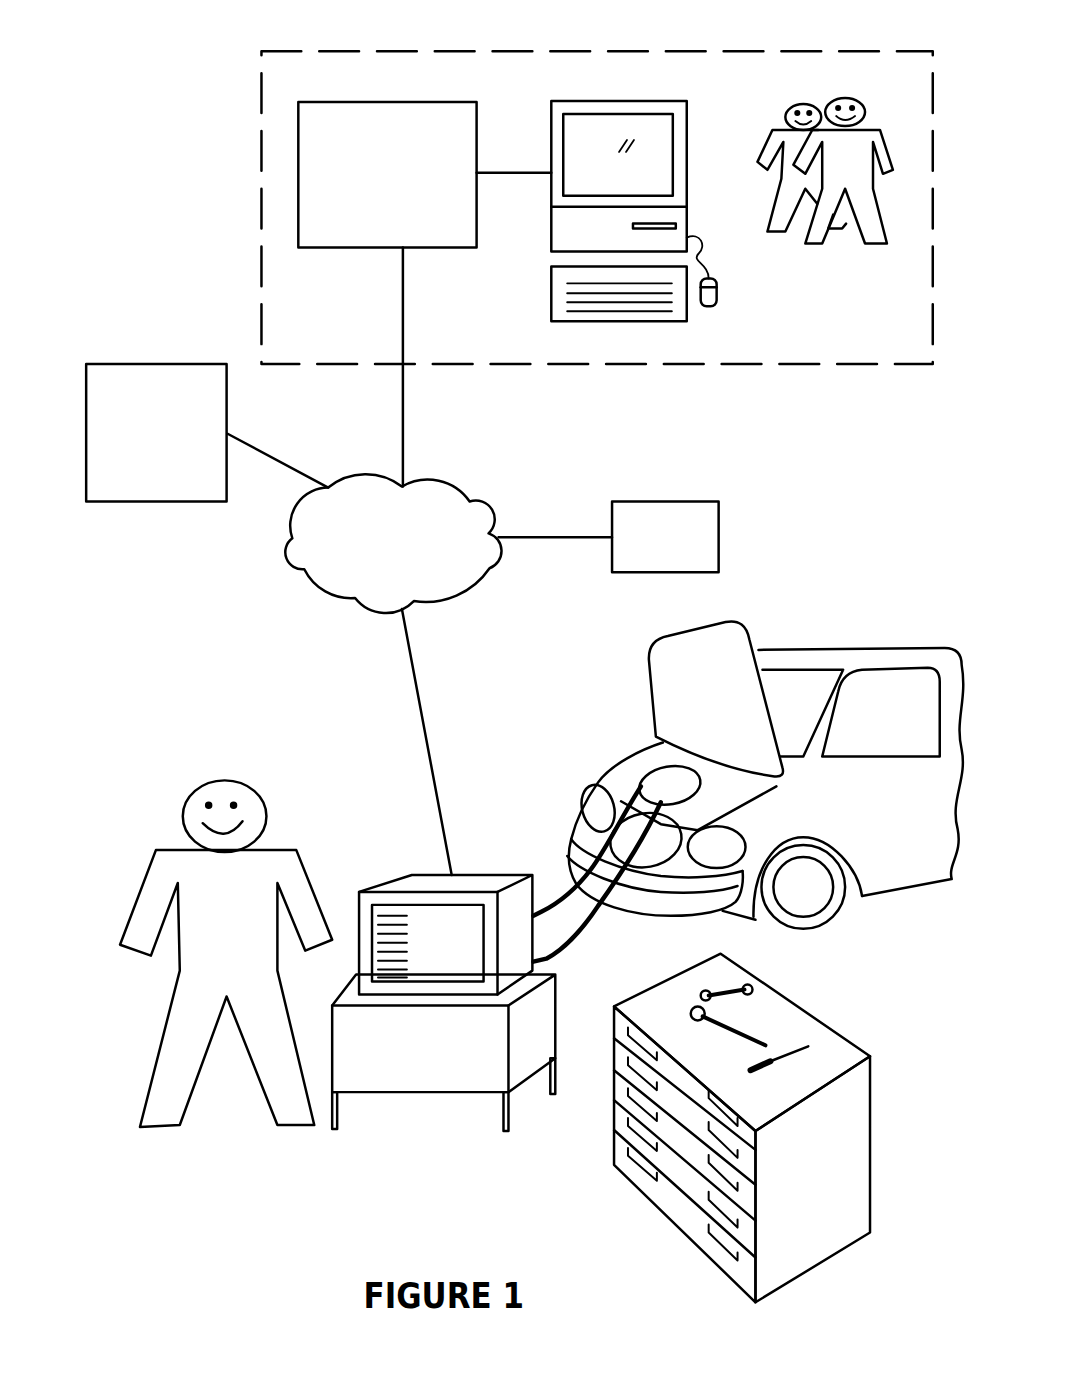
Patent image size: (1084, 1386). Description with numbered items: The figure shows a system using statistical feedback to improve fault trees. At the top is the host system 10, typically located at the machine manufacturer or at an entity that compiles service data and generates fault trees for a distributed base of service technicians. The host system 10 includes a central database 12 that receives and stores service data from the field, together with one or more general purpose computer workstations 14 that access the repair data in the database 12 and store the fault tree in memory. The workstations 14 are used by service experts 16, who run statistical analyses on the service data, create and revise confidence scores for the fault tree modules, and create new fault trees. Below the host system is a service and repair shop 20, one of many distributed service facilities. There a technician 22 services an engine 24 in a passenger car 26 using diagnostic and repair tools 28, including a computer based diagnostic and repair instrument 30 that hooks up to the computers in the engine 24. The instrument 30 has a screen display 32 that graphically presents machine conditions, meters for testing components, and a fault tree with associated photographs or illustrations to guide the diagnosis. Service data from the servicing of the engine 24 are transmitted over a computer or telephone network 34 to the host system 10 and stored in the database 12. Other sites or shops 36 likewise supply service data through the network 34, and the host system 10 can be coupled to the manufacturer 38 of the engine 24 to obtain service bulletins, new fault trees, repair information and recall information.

The host system 10 is at (258, 240).
The central database 12 is at (475, 128).
The computer workstation 14 is at (686, 128).
The service experts 16 is at (808, 243).
The service and repair shop 20 is at (102, 767).
The technician 22 is at (312, 868).
The engine 24 is at (670, 785).
The passenger car 26 is at (748, 795).
The diagnostic and repair tools 28 is at (635, 1187).
The computer based diagnostic and repair instrument 30 is at (443, 967).
The screen display 32 is at (436, 965).
The network (internet) 34 is at (365, 609).
The other sites or shops 36 is at (207, 501).
The manufacturer 38 is at (718, 555).